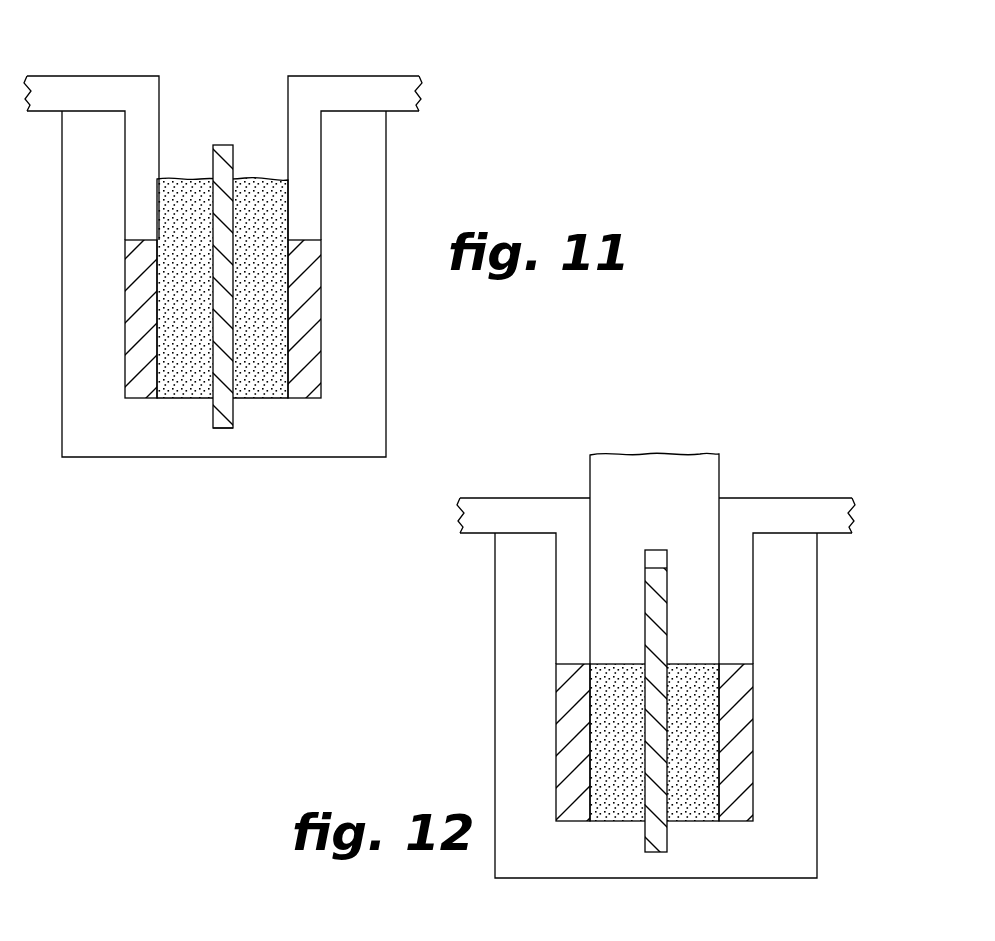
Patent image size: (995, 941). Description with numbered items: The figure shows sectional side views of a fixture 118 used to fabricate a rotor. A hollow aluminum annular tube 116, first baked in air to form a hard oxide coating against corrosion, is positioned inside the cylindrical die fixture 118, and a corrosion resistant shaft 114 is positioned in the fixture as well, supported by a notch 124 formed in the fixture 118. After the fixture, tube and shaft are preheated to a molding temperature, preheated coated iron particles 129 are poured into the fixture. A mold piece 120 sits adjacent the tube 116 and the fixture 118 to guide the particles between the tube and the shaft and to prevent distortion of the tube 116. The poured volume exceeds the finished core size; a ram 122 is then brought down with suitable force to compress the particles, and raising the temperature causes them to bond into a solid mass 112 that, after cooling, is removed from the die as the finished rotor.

In FIG. 12, the solid mass 112 is at (612, 663).
In FIG. 11, the shaft 114 is at (222, 145).
In FIG. 12, the shaft 114 is at (645, 598).
In FIG. 11, the annular tube 116 is at (137, 370).
In FIG. 12, the annular tube 116 is at (567, 722).
In FIG. 11, the fixture 118 is at (358, 183).
In FIG. 12, the fixture 118 is at (522, 582).
In FIG. 11, the mold piece 120 is at (357, 82).
In FIG. 12, the mold piece 120 is at (766, 512).
In FIG. 12, the ram 122 is at (661, 482).
In FIG. 11, the notch 124 is at (235, 415).
In FIG. 11, the coated iron particles 129 is at (267, 183).